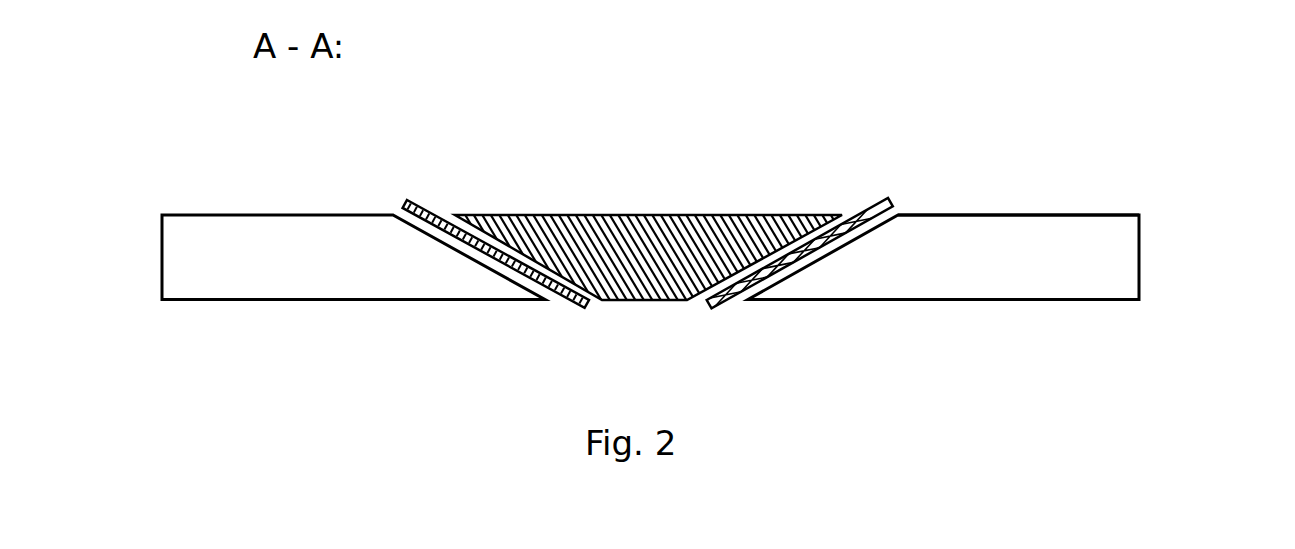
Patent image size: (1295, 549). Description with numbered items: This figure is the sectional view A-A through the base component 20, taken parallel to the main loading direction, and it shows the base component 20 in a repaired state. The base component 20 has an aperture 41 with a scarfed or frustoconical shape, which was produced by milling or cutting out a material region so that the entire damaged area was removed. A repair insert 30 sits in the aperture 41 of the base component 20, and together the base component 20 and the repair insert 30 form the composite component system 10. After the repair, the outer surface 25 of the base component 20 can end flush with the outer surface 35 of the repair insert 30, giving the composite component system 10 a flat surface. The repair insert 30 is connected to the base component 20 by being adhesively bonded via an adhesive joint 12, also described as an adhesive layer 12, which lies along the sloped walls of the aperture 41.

The composite component system 10 is at (942, 150).
The base component 20 is at (258, 200).
The outer surface of the base component 25 is at (1018, 213).
The repair insert 30 is at (583, 195).
The outer surface of the repair insert 35 is at (747, 213).
The aperture 41 is at (558, 307).
The adhesive joint 12 is at (707, 308).